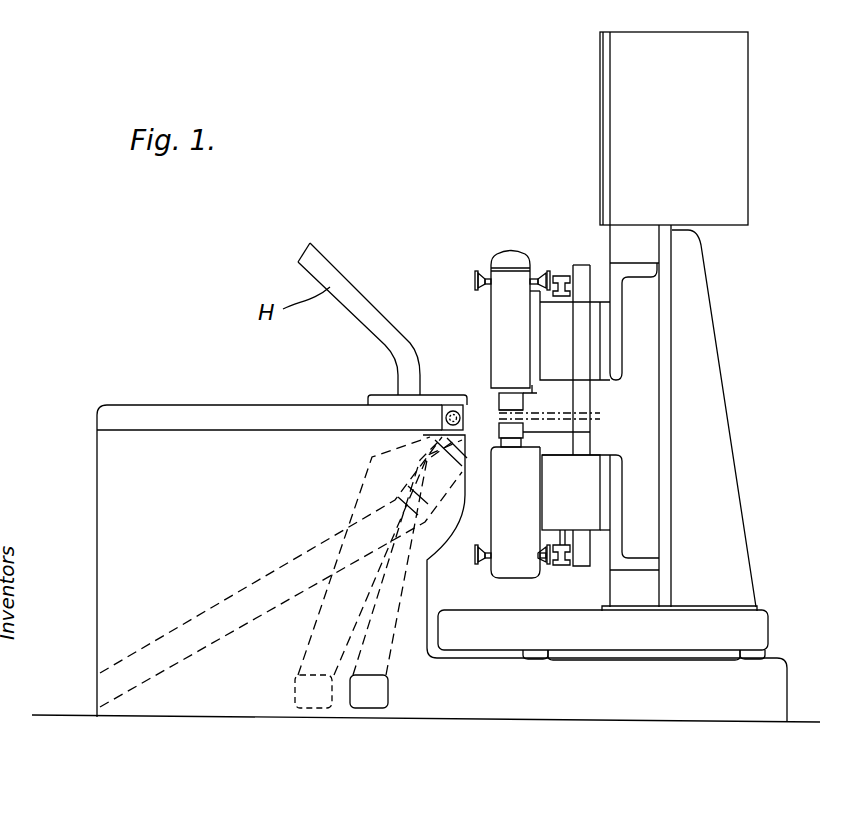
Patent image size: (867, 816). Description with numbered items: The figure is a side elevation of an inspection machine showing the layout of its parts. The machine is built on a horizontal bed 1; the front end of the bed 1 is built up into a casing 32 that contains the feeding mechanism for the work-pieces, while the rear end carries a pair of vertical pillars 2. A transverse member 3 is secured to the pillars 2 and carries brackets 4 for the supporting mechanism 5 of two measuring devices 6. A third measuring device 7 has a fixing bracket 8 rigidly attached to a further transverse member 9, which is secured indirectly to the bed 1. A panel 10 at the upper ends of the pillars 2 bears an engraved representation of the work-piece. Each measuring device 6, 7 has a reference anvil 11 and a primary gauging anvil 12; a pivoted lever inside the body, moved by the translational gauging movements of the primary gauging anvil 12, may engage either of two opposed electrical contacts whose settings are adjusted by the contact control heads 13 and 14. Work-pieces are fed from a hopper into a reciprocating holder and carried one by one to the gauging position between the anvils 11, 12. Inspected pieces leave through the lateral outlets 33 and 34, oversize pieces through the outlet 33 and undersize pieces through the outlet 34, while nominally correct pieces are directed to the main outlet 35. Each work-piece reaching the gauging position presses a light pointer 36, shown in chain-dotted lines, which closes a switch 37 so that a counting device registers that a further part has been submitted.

The horizontal bed 1 is at (581, 718).
The vertical pillars 2 is at (672, 436).
The transverse member 3 is at (655, 248).
The brackets 4 is at (622, 296).
The supporting mechanism 5 is at (562, 350).
The measuring devices 6 is at (491, 326).
The third measuring device 7 is at (491, 522).
The fixing bracket 8 is at (620, 492).
The further transverse member 9 is at (638, 585).
The panel 10 is at (600, 95).
The reference anvil 11 is at (538, 403).
The primary gauging anvil 12 is at (500, 395).
The contact control head 13 is at (551, 274).
The contact control head 14 is at (479, 272).
The casing 32 is at (97, 533).
The lateral outlet 33 is at (312, 708).
The lateral outlet 34 is at (376, 708).
The main outlet 35 is at (97, 680).
The light pointer 36 is at (498, 405).
The switch 37 is at (528, 410).